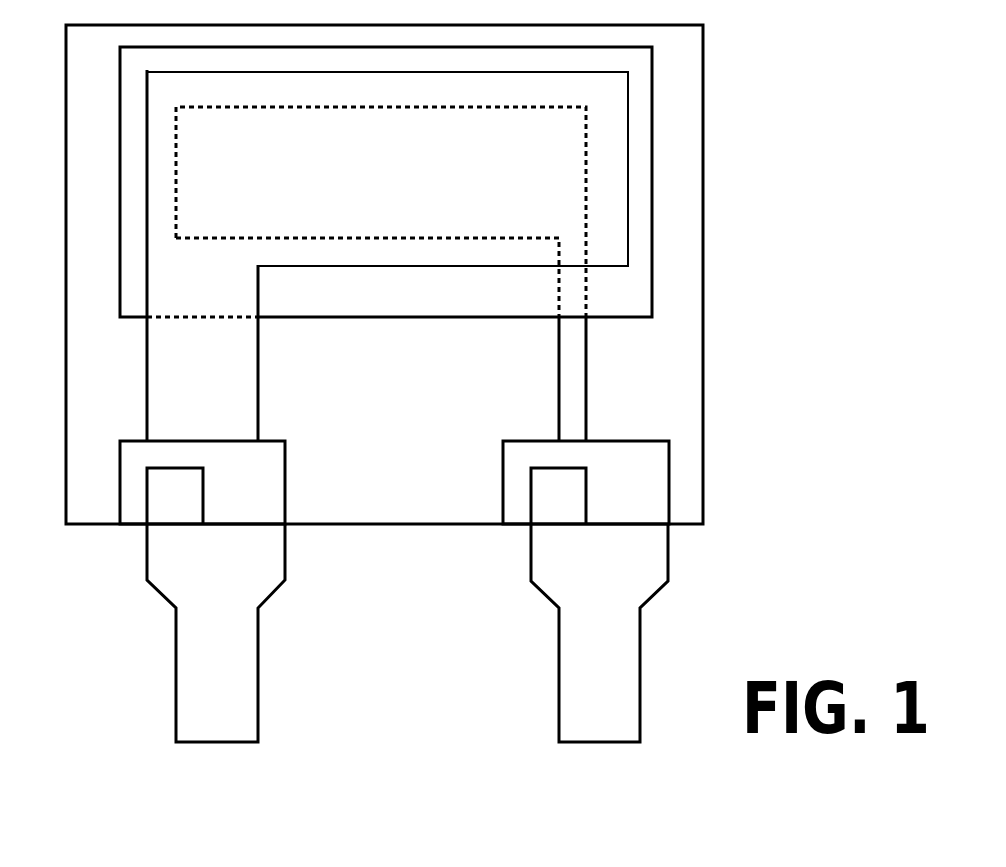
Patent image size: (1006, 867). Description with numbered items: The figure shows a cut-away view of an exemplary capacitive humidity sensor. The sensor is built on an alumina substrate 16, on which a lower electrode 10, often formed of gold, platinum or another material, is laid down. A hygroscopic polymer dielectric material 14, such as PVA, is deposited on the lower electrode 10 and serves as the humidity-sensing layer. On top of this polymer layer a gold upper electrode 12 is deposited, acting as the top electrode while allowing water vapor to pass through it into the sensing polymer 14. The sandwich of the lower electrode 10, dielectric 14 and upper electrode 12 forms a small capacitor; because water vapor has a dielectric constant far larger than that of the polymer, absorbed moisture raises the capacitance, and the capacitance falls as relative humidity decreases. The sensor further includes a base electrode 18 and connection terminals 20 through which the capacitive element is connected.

The lower electrode 10 is at (587, 205).
The upper electrode 12 is at (602, 149).
The polymer dielectric material 14 is at (617, 293).
The alumina substrate 16 is at (462, 402).
The base electrode 18 is at (638, 498).
The connection terminals 20 is at (723, 604).